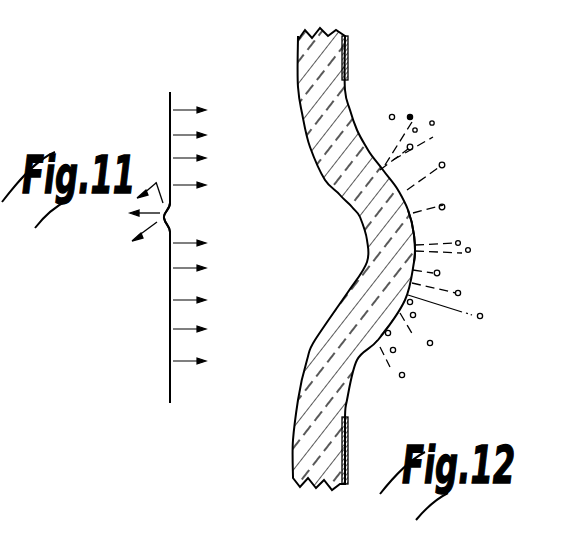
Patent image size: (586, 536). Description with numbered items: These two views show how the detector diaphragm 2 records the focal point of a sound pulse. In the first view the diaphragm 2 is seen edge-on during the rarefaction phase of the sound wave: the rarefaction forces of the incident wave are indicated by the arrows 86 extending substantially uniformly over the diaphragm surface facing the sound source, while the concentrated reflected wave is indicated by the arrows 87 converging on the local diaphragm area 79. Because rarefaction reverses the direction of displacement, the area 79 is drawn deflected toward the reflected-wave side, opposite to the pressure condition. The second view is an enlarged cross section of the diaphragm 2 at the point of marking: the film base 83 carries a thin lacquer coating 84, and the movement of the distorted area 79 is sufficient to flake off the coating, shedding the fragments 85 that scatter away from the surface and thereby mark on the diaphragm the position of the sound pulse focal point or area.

In FIG. 11, the panel 2 is at (176, 100).
In FIG. 12, the panel 2 is at (326, 259).
In FIG. 11, the diaphragm area 79 is at (165, 218).
In FIG. 12, the diaphragm area 79 is at (412, 236).
In FIG. 12, the film base 83 is at (318, 450).
In FIG. 12, the lacquer coating 84 is at (349, 74).
In FIG. 12, the fragments 85 is at (446, 207).
In FIG. 11, the arrows 86 is at (186, 158).
In FIG. 11, the arrows 87 is at (146, 206).